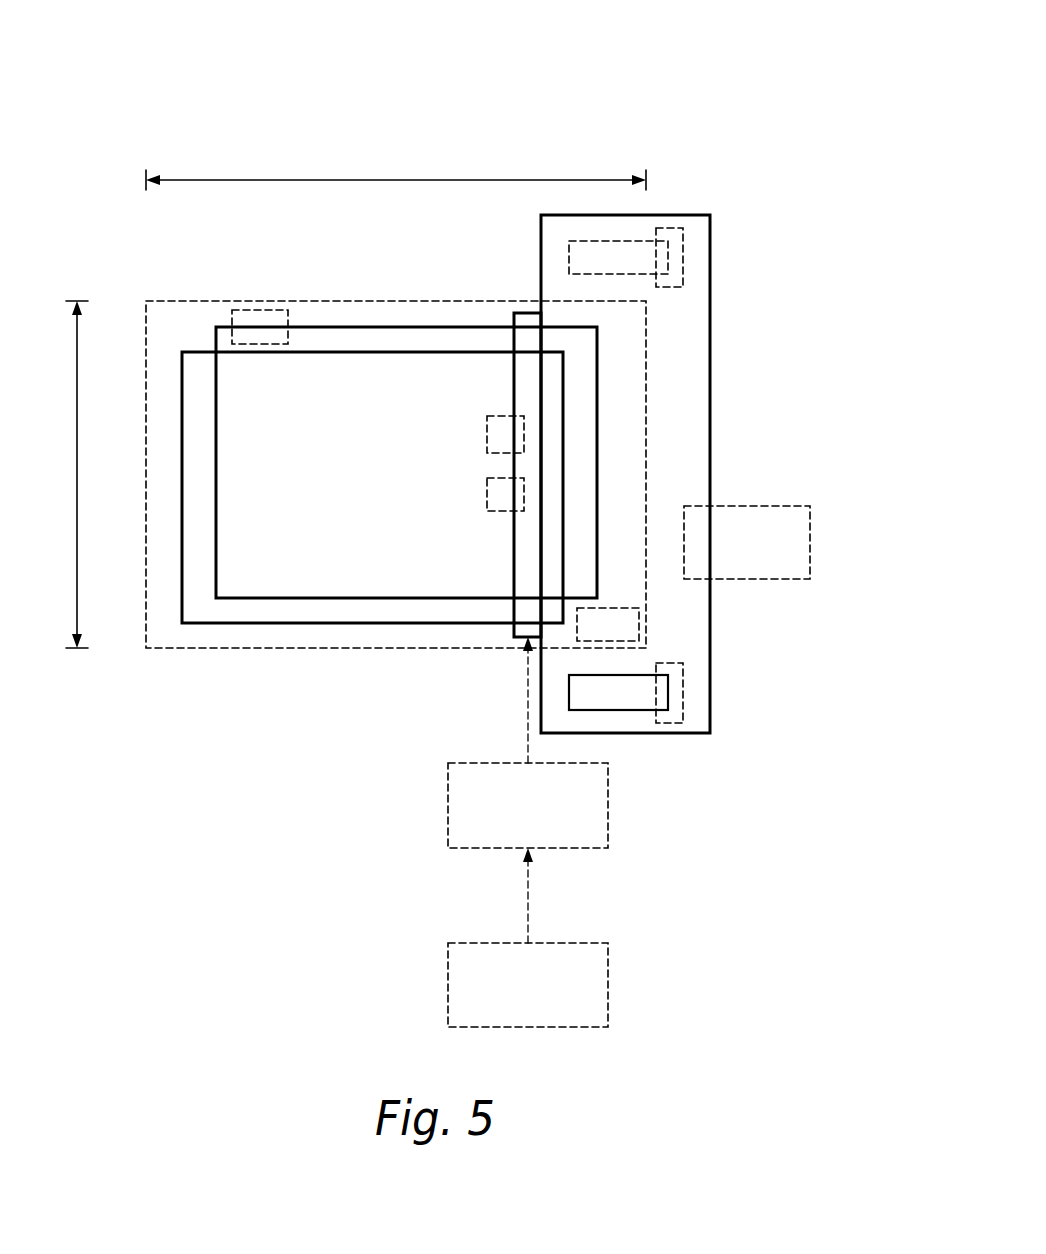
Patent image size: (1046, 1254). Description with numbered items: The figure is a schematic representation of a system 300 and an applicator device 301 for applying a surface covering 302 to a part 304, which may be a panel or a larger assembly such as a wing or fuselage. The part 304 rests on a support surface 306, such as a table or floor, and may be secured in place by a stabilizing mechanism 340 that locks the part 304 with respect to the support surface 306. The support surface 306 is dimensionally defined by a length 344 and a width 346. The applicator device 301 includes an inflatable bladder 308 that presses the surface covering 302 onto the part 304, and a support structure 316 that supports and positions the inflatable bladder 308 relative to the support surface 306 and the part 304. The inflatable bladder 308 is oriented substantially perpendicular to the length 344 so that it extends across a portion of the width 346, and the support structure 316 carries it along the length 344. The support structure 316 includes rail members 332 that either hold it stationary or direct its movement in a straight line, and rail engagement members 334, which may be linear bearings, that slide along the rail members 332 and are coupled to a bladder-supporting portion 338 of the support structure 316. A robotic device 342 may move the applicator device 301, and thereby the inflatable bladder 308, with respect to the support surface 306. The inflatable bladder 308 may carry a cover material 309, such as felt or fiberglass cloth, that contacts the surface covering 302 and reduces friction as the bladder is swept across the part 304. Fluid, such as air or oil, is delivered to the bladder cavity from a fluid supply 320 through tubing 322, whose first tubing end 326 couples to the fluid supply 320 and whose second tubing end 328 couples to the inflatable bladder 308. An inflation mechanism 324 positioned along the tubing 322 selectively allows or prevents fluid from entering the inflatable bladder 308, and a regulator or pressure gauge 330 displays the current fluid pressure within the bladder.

The system 300 is at (780, 62).
The applicator device 301 is at (753, 143).
The surface covering 302 is at (182, 352).
The part 304 is at (343, 327).
The support surface 306 is at (151, 441).
The inflatable bladder 308 is at (522, 572).
The cover material 309 is at (515, 553).
The support structure 316 is at (705, 720).
The fluid supply 320 is at (575, 1027).
The tubing 322 is at (528, 716).
The inflation mechanism 324 is at (488, 434).
The first tubing end 326 is at (528, 941).
The second tubing end 328 is at (521, 639).
The pressure gauge 330 is at (488, 498).
The rail members 332 is at (638, 269).
The rail engagement members 334 is at (673, 287).
The bladder-supporting portion 338 is at (690, 424).
The stabilizing mechanism 340 is at (247, 308).
The robotic device 342 is at (800, 544).
The length 344 is at (420, 178).
The width 346 is at (53, 474).